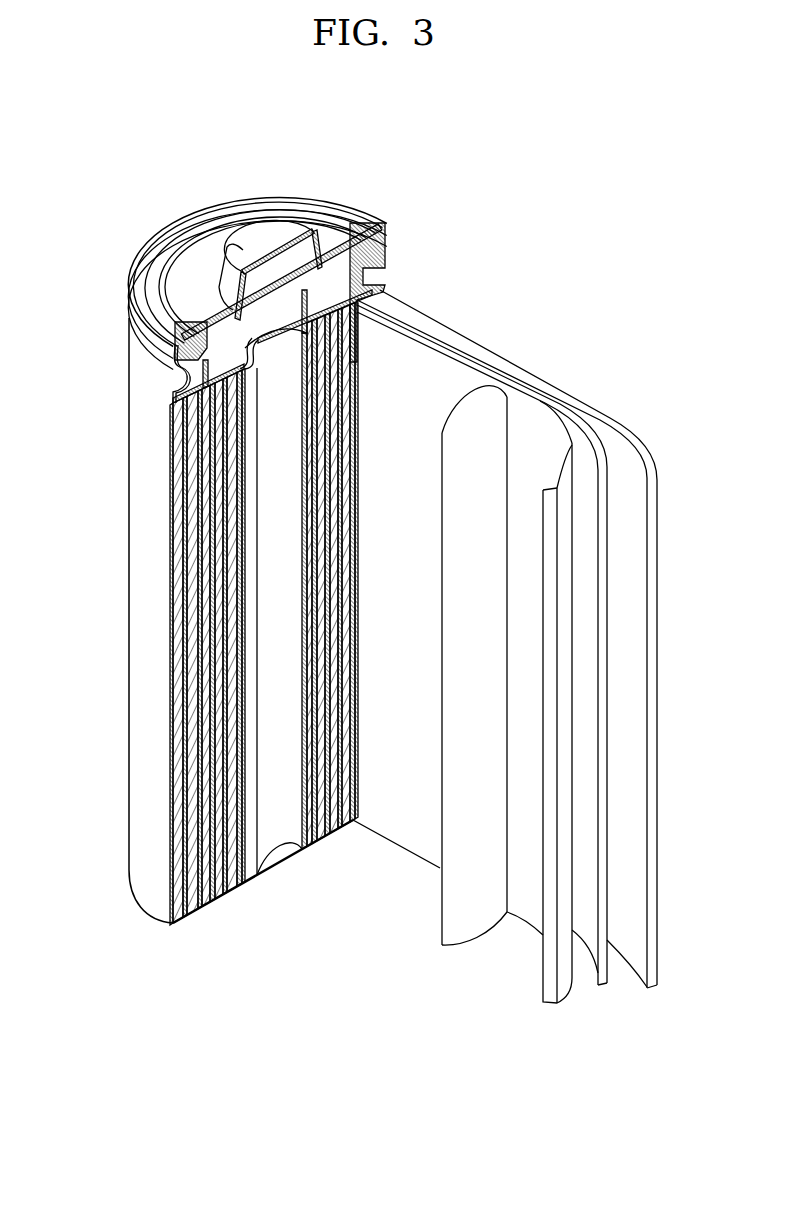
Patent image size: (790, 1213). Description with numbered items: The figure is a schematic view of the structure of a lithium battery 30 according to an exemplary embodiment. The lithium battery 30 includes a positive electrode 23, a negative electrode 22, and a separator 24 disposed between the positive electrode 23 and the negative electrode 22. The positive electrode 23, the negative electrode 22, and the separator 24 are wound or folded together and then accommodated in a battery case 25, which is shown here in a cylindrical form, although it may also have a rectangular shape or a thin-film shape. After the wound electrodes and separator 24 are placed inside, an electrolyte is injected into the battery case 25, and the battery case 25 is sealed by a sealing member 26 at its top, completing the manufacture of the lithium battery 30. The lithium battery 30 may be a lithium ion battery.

The negative electrode 22 is at (643, 453).
The positive electrode 23 is at (530, 407).
The separator 24 is at (590, 432).
The battery case 25 is at (142, 601).
The sealing member 26 is at (255, 237).
The lithium battery 30 is at (503, 164).